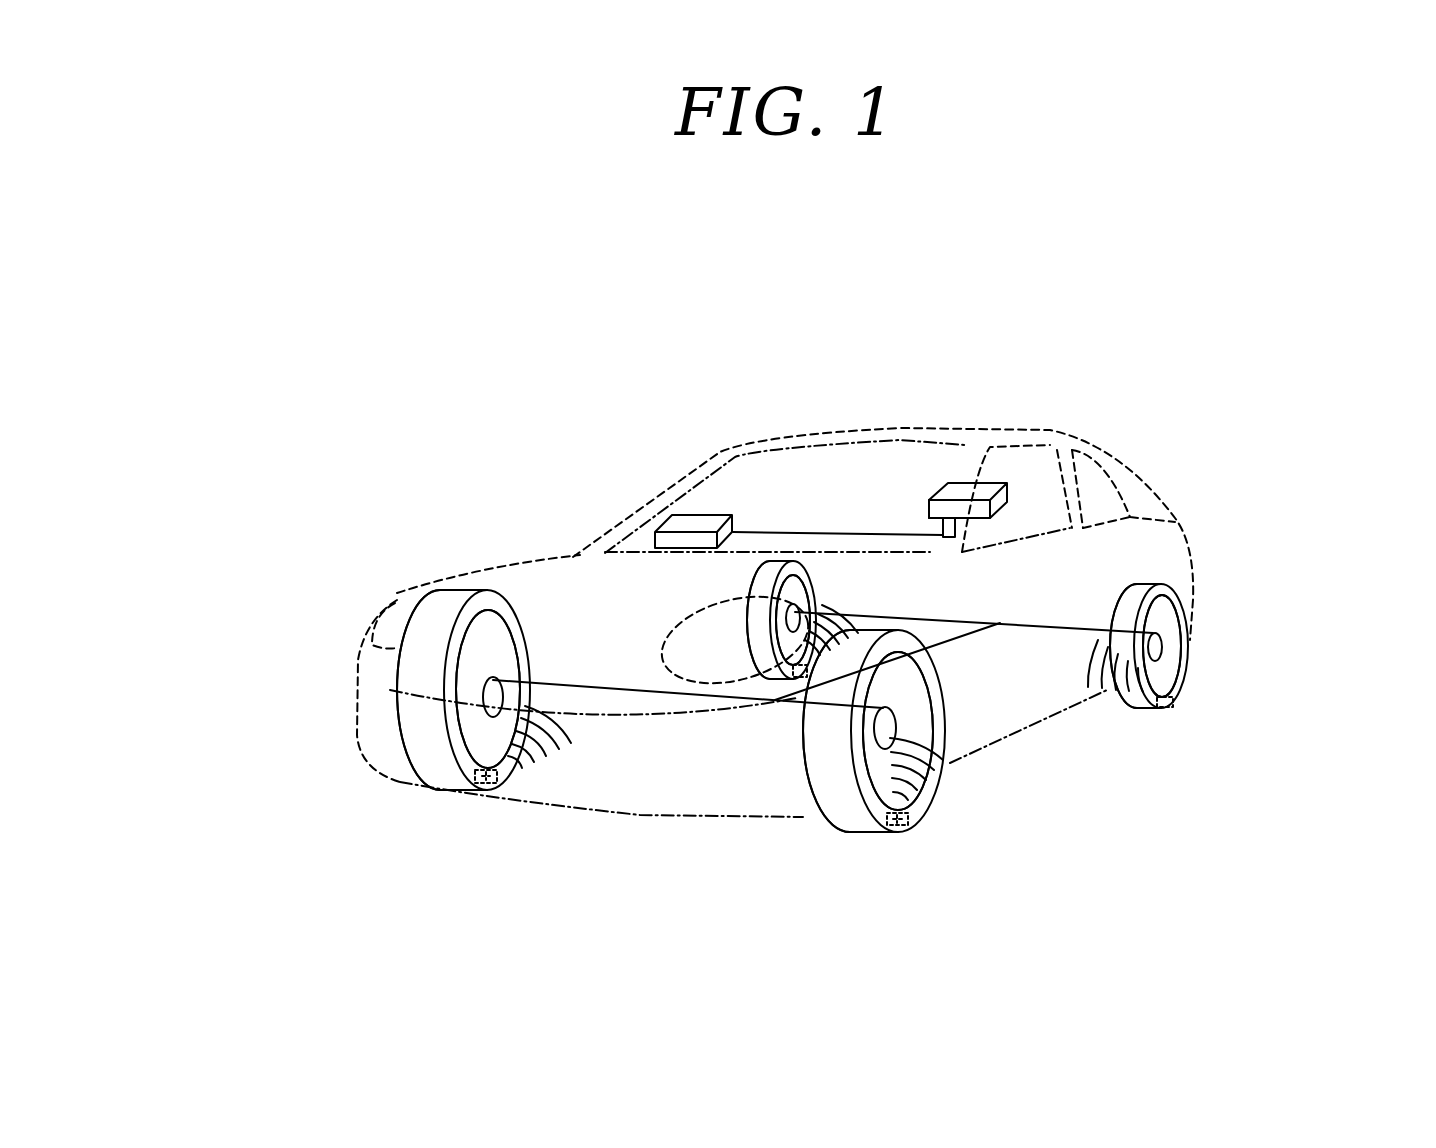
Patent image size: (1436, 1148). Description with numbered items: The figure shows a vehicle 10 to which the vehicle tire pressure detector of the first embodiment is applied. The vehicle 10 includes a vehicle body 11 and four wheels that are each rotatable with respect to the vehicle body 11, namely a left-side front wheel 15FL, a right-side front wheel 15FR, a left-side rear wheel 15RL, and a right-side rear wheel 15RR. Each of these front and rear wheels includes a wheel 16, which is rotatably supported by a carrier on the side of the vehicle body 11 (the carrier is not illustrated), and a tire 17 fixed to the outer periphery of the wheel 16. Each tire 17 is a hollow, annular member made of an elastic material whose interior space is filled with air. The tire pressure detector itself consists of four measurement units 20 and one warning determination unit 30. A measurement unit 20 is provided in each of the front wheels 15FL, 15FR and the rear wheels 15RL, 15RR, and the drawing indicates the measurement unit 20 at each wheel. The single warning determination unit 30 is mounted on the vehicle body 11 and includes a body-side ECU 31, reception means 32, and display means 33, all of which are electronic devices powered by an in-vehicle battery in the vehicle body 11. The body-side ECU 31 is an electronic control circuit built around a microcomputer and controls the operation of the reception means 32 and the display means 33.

The vehicle 10 is at (522, 467).
The vehicle body 11 is at (1173, 522).
The right-side front wheel 15FR is at (396, 668).
The left-side front wheel 15FL is at (947, 728).
The right-side rear wheel 15RR is at (816, 588).
The left-side rear wheel 15RL is at (1190, 660).
The wheel 16 is at (487, 645).
The tire 17 is at (408, 727).
The measurement unit 20 is at (700, 645).
The warning determination unit 30 is at (930, 252).
The body-side ECU 31 is at (968, 493).
The reception means 32 is at (959, 509).
The display means 33 is at (708, 518).